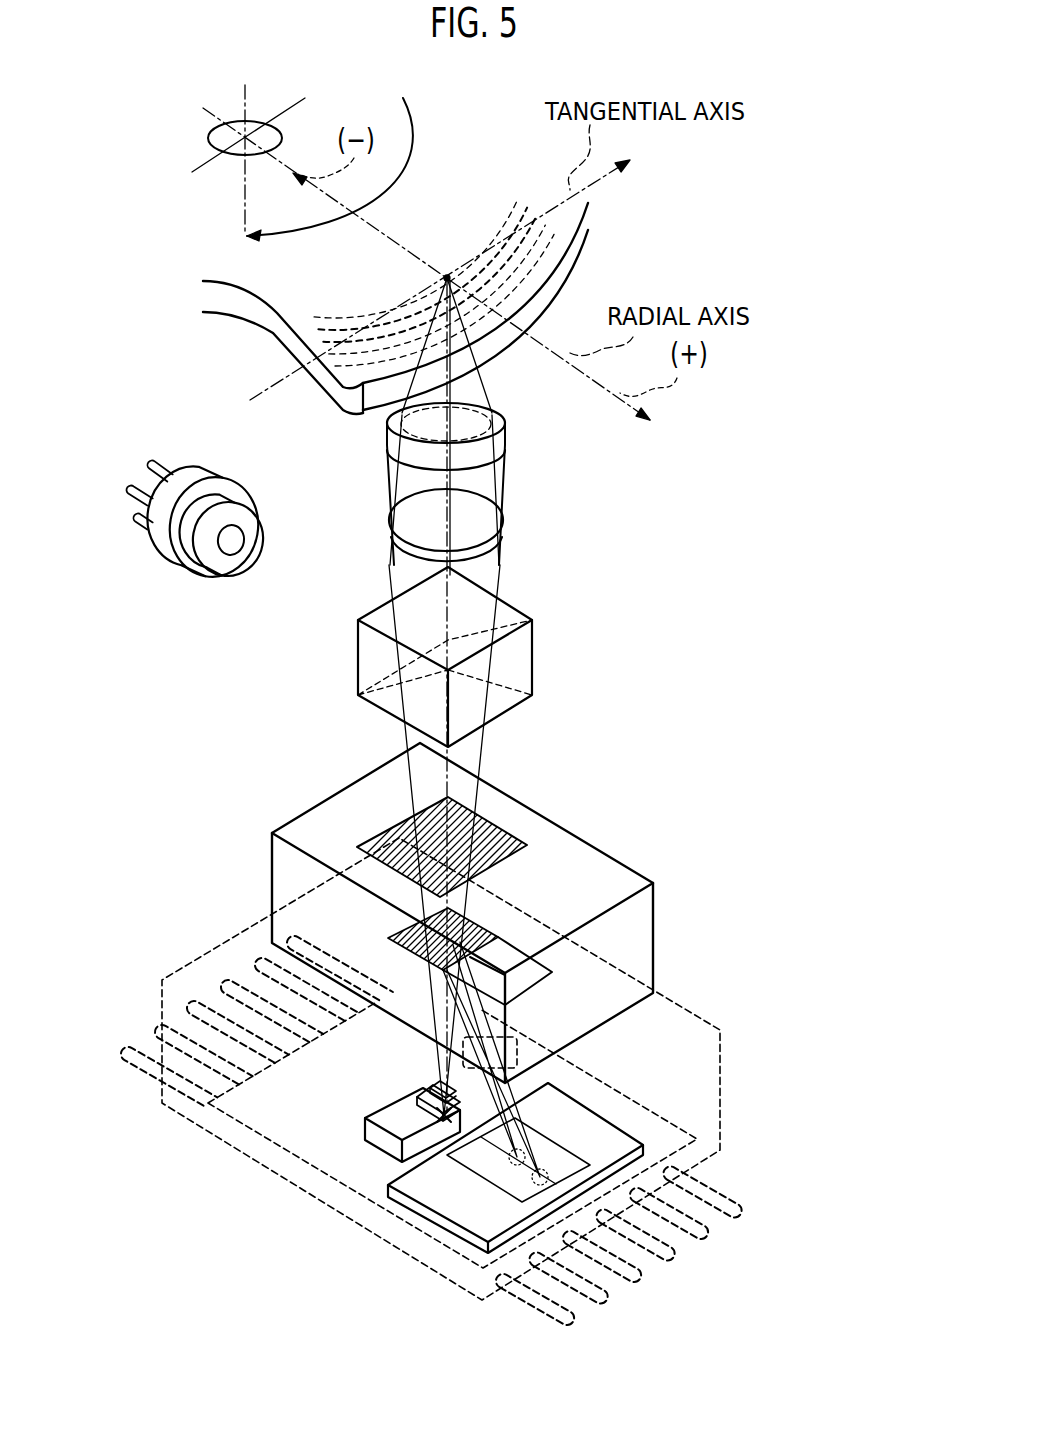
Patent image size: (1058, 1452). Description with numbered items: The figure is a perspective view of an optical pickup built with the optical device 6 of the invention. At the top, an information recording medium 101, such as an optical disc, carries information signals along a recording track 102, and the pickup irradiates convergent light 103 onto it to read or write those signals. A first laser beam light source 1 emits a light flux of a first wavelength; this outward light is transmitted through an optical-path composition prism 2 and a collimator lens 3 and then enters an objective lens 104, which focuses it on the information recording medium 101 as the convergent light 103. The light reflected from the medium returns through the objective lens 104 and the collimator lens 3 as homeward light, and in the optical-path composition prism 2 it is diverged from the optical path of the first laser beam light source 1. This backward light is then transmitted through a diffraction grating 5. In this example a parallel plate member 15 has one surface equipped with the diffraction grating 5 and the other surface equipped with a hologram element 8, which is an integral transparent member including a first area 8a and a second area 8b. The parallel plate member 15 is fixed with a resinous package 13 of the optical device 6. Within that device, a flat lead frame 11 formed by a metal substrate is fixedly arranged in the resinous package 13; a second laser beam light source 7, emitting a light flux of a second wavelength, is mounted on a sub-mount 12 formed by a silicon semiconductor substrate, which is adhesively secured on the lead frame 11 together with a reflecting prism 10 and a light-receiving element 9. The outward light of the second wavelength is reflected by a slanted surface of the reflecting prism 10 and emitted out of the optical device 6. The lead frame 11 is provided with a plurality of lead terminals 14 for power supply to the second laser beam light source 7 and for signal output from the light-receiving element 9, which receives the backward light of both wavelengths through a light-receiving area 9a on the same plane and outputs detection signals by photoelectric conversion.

The first laser beam light source 1 is at (215, 566).
The optical-path composition prism 2 is at (518, 663).
The collimator lens 3 is at (497, 523).
The diffraction grating 5 is at (493, 810).
The optical device 6 is at (421, 1081).
The second laser beam light source 7 is at (413, 1085).
The hologram element 8 is at (487, 921).
The first area 8a is at (495, 933).
The second area 8b is at (528, 967).
The light-receiving element 9 is at (483, 1195).
The light-receiving area 9a is at (517, 1177).
The reflecting prism 10 is at (440, 1088).
The lead frame 11 is at (267, 1125).
The sub-mount 12 is at (377, 1138).
The resinous package 13 is at (297, 1167).
The lead terminals 14 is at (130, 1056).
The parallel plate member 15 is at (627, 863).
The information recording medium 101 is at (567, 243).
The recording track 102 is at (338, 328).
The convergent light 103 is at (443, 277).
The objective lens 104 is at (387, 430).